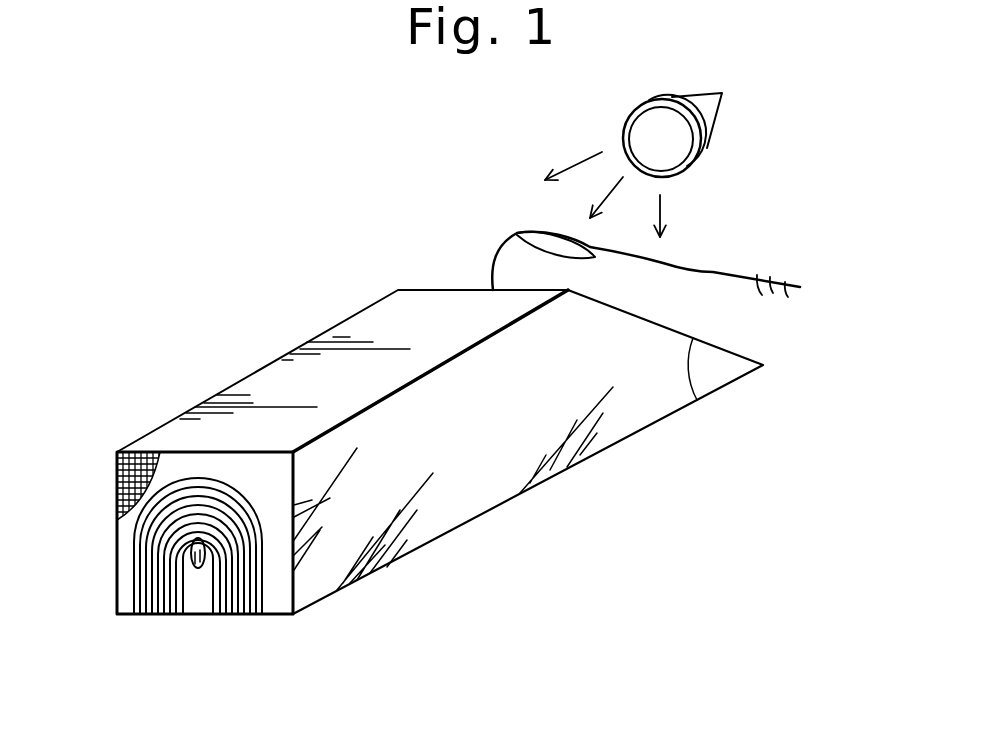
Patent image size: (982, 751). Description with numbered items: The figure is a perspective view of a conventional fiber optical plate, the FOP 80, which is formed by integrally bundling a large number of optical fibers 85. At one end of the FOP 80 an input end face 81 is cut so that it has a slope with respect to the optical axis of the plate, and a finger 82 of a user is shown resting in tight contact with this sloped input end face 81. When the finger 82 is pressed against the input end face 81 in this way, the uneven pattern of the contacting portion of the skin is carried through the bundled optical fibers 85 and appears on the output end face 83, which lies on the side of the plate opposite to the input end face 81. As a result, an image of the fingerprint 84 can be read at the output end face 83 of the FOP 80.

The fiber optical plate 80 is at (440, 477).
The input end face 81 is at (730, 347).
The finger 82 is at (693, 287).
The output end face 83 is at (282, 597).
The fingerprint 84 is at (160, 600).
The optical fibers 85 is at (117, 483).